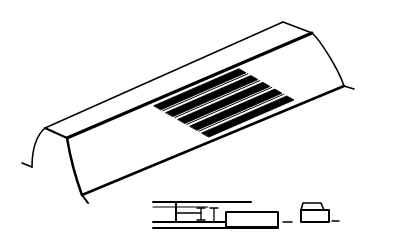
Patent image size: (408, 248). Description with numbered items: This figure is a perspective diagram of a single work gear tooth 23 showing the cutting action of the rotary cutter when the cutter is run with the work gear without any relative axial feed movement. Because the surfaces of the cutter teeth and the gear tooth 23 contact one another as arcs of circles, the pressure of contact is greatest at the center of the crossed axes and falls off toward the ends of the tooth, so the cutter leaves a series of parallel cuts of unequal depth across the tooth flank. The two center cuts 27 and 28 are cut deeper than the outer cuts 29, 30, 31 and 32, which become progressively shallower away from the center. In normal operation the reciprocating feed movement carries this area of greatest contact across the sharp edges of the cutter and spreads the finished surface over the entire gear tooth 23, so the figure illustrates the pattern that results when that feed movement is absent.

The gear tooth 23 is at (88, 162).
The center cut 27 is at (203, 80).
The center cut 28 is at (188, 84).
The outer cut 29 is at (288, 92).
The outer cut 30 is at (273, 110).
The outer cut 31 is at (224, 131).
The outer cut 32 is at (213, 139).